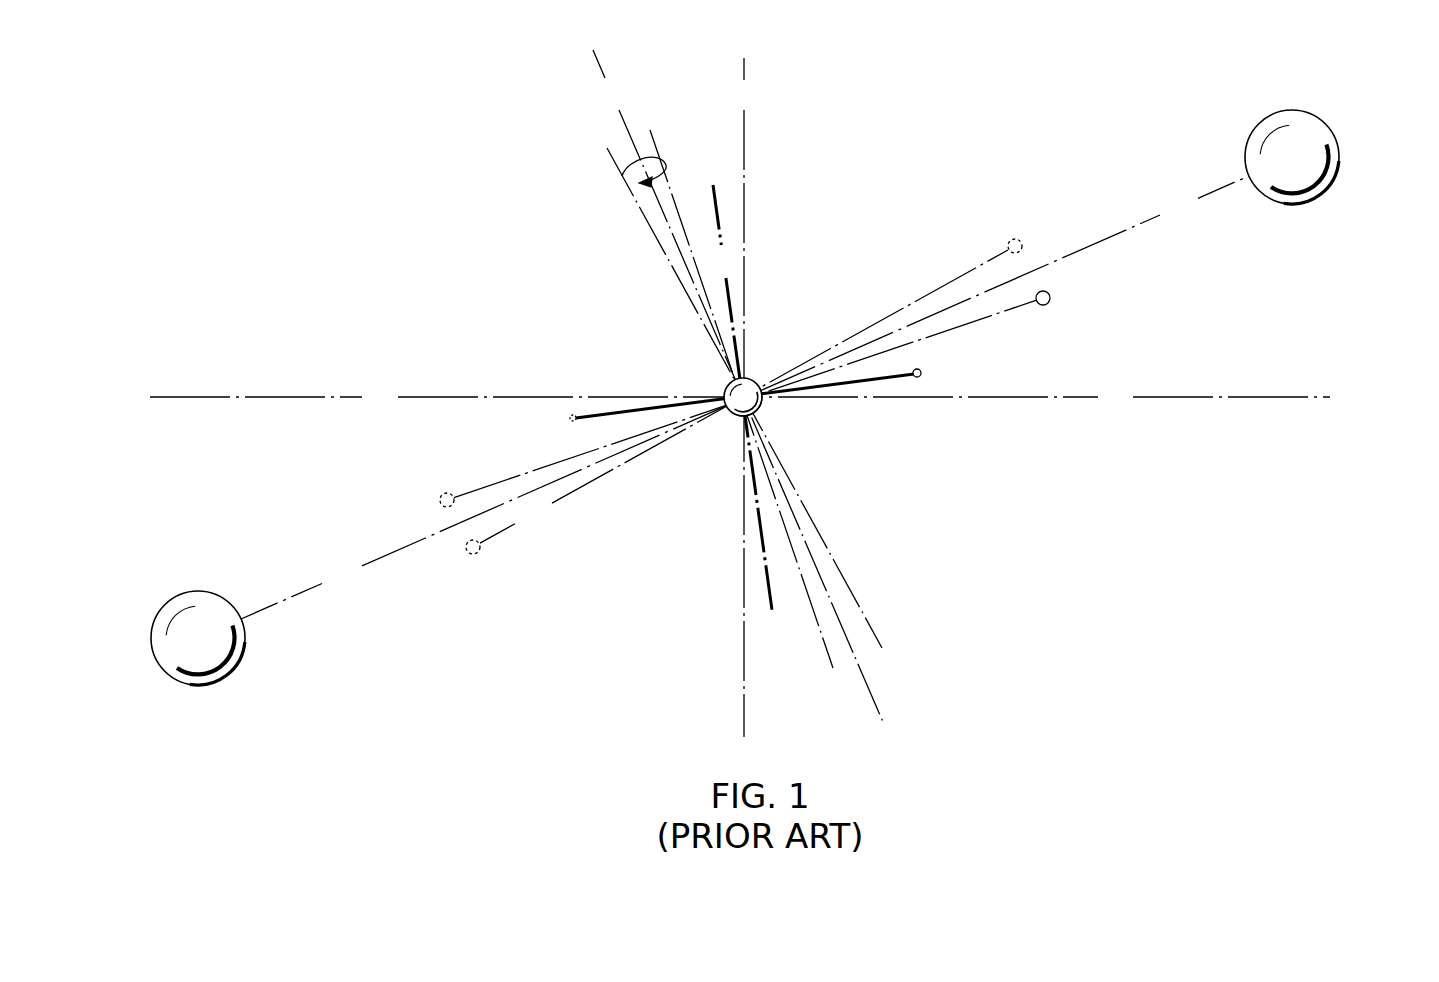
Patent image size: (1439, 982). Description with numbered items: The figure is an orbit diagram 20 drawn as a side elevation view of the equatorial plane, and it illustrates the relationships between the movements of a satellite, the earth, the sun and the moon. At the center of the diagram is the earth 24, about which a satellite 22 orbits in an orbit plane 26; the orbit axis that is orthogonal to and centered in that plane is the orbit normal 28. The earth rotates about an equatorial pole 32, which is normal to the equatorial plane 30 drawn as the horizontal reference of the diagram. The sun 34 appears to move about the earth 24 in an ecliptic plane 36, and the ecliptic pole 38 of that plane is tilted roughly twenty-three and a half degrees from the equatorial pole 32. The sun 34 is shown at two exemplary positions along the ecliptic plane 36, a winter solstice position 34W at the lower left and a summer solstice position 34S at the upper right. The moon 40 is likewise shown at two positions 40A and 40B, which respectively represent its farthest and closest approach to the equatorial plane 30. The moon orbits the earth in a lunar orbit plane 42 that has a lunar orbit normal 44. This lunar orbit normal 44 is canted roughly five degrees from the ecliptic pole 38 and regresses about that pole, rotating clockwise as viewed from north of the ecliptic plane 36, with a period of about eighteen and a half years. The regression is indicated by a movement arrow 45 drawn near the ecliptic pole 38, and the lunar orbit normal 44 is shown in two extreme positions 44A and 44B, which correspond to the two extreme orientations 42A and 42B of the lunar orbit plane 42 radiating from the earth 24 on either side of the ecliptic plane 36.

The orbit diagram 20 is at (437, 230).
The satellite 22 is at (932, 390).
The earth 24 is at (724, 390).
The orbit plane 26 is at (878, 394).
The orbit normal 28 is at (739, 397).
The equatorial plane 30 is at (740, 399).
The equatorial pole 32 is at (743, 397).
The sun 34 is at (1342, 210).
The summer solstice position 34S is at (1340, 165).
The winter solstice position 34W is at (247, 647).
The ecliptic plane 36 is at (745, 397).
The ecliptic pole 38 is at (737, 386).
The moon 40 is at (1062, 310).
The moon position 40A is at (473, 554).
The moon position 40B is at (447, 493).
The lunar orbit plane 42 is at (744, 396).
The extreme orientation of lunar orbit plane 42A is at (967, 275).
The extreme orientation of lunar orbit plane 42B is at (997, 313).
The lunar orbit normal 44 is at (644, 249).
The extreme position of lunar orbit normal 44A is at (633, 198).
The extreme position of lunar orbit normal 44B is at (673, 192).
The movement arrow 45 is at (622, 176).